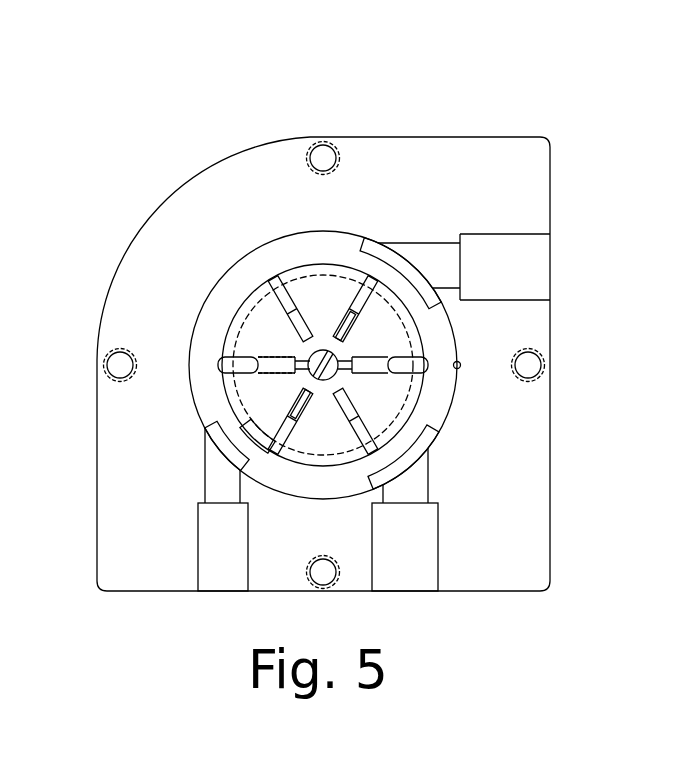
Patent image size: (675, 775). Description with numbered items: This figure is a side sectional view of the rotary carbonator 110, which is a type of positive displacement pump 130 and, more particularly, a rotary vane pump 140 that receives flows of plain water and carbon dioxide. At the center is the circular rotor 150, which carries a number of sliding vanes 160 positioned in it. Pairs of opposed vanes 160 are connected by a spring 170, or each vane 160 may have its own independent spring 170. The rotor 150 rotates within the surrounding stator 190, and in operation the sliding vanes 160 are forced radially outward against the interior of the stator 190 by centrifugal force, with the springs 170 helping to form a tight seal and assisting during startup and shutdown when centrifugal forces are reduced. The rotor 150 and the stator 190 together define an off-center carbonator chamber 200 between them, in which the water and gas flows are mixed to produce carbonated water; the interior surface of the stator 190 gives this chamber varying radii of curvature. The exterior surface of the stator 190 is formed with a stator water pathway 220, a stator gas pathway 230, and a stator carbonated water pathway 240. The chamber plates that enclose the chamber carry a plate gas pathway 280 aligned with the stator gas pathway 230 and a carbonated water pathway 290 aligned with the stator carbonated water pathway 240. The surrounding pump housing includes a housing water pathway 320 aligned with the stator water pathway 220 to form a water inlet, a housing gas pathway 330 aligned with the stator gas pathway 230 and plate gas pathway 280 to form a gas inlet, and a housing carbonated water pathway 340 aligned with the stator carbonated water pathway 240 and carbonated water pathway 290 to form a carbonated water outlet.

The rotary carbonator 110 is at (130, 113).
The positive displacement pump 130 is at (498, 135).
The rotary vane pump 140 is at (324, 326).
The circular rotor 150 is at (393, 303).
The sliding vanes 160 is at (276, 277).
The spring 170 is at (347, 326).
The stator 190 is at (216, 283).
The off-center carbonator chamber 200 is at (232, 405).
The stator water pathway 220 is at (258, 424).
The stator gas pathway 230 is at (357, 444).
The stator carbonated water pathway 240 is at (356, 284).
The plate gas pathway 280 is at (414, 424).
The carbonated water pathway 290 is at (354, 269).
The housing water pathway 320 is at (405, 519).
The housing gas pathway 330 is at (223, 509).
The housing carbonated water pathway 340 is at (449, 265).